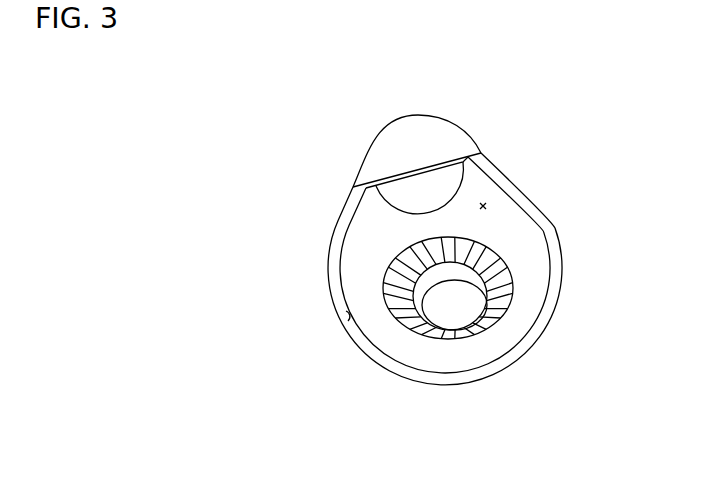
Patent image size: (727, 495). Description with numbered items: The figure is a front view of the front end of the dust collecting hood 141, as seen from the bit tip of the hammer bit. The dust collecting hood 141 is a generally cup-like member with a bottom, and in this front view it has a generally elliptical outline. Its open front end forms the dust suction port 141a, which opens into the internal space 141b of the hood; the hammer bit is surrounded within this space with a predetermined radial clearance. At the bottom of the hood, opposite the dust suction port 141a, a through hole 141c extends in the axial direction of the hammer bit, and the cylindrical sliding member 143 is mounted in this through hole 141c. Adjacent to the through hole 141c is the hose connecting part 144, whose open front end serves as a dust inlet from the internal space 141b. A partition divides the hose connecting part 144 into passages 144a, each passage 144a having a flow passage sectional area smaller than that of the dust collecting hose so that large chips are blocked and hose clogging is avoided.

The dust collecting hood 141 is at (538, 202).
The dust suction port 141a is at (345, 315).
The internal space 141b is at (483, 206).
The through hole 141c is at (463, 335).
The cylindrical sliding member 143 is at (493, 307).
The hose connecting part 144 is at (398, 120).
The passage 144a is at (416, 193).